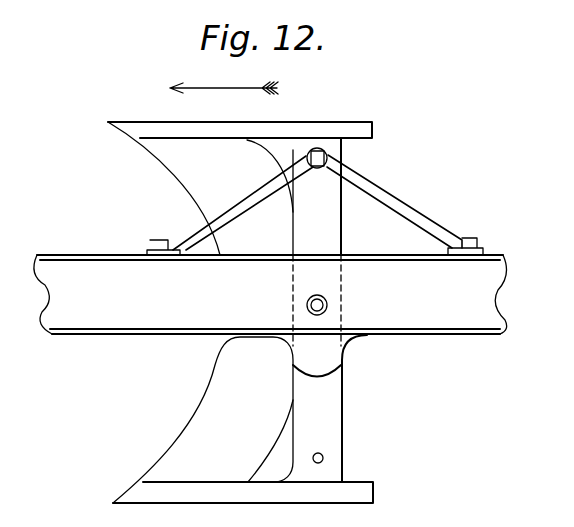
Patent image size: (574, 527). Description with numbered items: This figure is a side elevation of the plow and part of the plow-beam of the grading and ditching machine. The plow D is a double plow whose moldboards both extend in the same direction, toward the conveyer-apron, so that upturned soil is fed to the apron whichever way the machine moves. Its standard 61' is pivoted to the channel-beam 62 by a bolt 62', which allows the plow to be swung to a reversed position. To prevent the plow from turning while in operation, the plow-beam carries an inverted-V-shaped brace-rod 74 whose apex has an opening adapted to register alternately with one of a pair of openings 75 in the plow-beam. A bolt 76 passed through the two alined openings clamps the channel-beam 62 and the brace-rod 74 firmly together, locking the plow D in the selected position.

The plow D is at (200, 312).
The standard 61' is at (240, 234).
The channel-beam 62 is at (270, 294).
The bolt 62' is at (276, 309).
The brace-rod 74 is at (384, 205).
The openings 75 is at (324, 458).
The bolt 76 is at (327, 157).